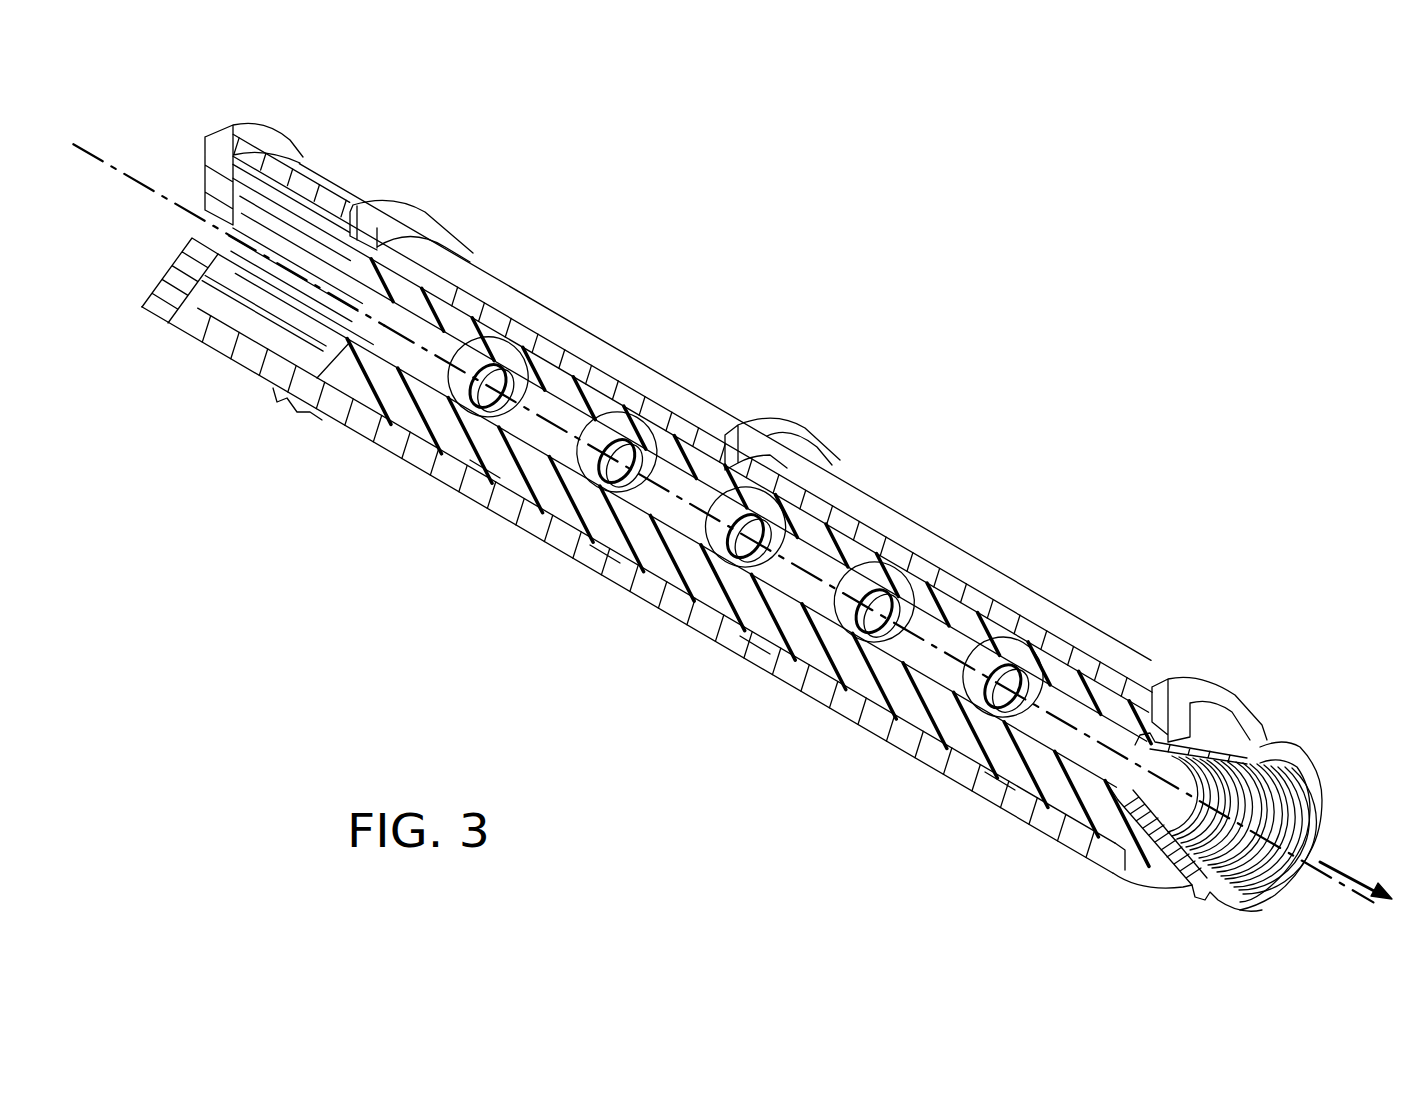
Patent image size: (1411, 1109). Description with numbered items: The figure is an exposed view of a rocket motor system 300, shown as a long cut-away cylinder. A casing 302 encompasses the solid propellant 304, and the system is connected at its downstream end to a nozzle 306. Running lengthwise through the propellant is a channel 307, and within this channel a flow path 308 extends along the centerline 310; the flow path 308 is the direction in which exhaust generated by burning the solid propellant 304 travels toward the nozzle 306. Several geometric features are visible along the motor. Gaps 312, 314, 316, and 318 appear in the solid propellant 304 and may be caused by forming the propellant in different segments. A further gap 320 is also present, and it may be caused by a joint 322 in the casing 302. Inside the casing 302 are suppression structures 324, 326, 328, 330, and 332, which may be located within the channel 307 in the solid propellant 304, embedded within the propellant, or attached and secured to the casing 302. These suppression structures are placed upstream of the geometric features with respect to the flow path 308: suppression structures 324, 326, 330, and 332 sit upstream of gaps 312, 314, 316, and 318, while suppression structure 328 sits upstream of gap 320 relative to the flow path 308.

The rocket motor system 300 is at (937, 287).
The casing 302 is at (1082, 612).
The solid propellant 304 is at (440, 427).
The nozzle 306 is at (1287, 743).
The channel 307 is at (547, 403).
The flow path 308 is at (1373, 847).
The centerline 310 is at (160, 205).
The gap 312 is at (478, 450).
The gap 314 is at (598, 553).
The gap 316 is at (860, 703).
The gap 318 is at (993, 777).
The gap 320 is at (750, 642).
The joint 322 is at (803, 433).
The suppression structure 324 is at (482, 362).
The suppression structure 326 is at (617, 420).
The suppression structure 328 is at (708, 478).
The suppression structure 330 is at (870, 553).
The suppression structure 332 is at (990, 630).